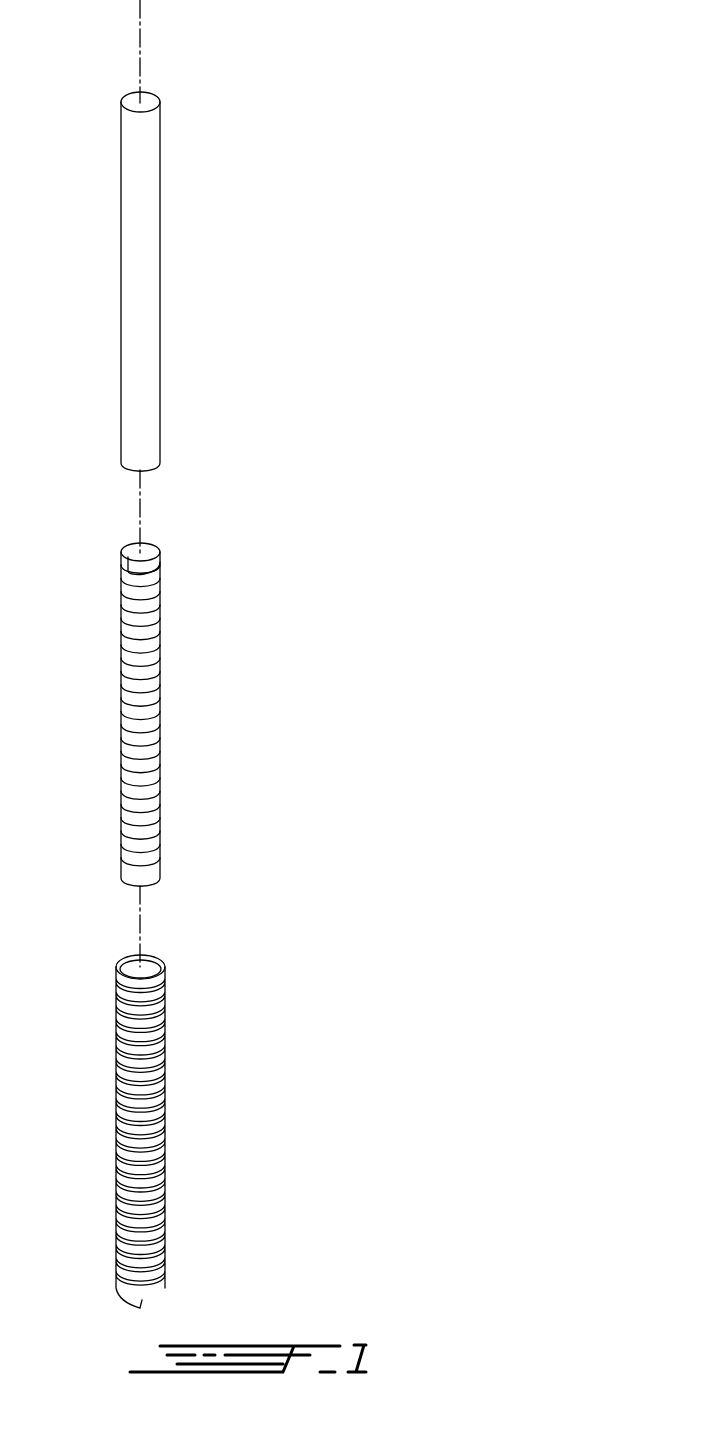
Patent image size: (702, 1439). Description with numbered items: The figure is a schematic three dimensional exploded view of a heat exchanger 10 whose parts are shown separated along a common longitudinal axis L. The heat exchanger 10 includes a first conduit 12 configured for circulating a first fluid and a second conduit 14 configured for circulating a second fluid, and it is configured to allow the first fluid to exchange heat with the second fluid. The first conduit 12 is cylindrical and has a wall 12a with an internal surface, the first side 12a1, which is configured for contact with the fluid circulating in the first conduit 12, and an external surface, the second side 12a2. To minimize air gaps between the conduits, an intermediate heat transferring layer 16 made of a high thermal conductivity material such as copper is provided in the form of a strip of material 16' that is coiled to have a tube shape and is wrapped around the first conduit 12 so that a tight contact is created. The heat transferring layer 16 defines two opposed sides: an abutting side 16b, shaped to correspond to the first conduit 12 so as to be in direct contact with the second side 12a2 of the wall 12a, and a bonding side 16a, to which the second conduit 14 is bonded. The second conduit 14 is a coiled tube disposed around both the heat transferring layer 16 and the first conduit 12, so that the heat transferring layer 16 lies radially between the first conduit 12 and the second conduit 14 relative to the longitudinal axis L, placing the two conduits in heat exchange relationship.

The heat exchanger 10 is at (381, 163).
The first conduit 12 is at (178, 198).
The wall 12a is at (160, 305).
The first side 12a1 is at (145, 102).
The second side 12a2 is at (160, 440).
The second conduit 14 is at (182, 1104).
The heat transferring layer 16 is at (226, 714).
The strip of material 16' is at (239, 859).
The bonding side 16a is at (160, 778).
The abutting side 16b is at (148, 551).
The longitudinal axis L is at (141, 27).